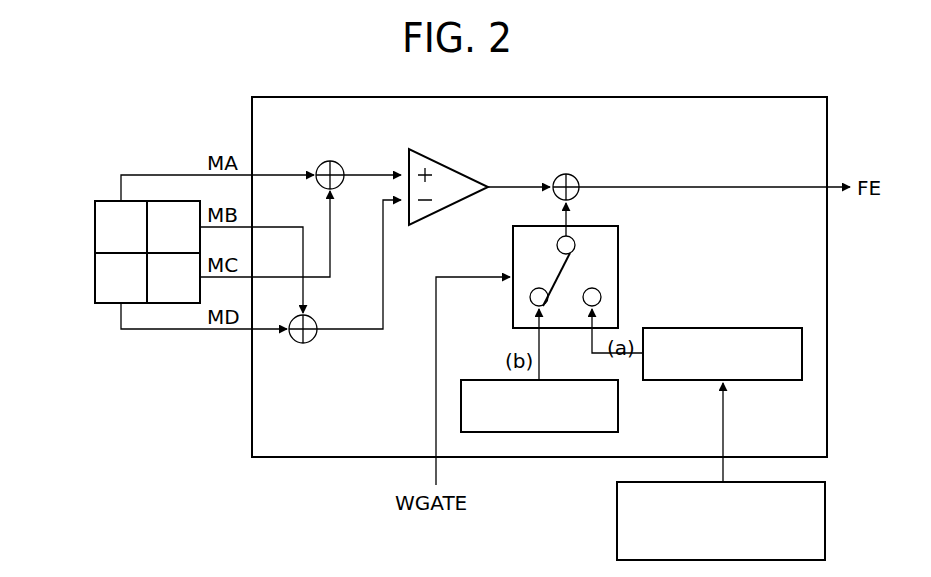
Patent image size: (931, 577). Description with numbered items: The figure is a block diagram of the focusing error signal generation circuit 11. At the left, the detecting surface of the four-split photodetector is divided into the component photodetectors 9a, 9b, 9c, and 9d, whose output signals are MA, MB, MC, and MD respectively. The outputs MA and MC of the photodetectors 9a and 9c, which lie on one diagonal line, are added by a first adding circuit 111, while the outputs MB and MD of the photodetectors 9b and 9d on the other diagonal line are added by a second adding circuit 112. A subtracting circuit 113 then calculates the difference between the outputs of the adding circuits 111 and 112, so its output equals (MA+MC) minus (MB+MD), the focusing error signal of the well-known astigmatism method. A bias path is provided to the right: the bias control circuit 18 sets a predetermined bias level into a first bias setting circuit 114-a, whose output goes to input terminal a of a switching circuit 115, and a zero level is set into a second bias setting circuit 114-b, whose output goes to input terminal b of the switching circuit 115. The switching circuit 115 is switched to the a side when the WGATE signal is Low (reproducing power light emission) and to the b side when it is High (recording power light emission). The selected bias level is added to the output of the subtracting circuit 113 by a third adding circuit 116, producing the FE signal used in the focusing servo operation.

The focusing error signal generation circuit 11 is at (727, 97).
The photodetector 9a is at (94, 226).
The photodetector 9b is at (175, 200).
The photodetector 9c is at (173, 304).
The photodetector 9d is at (94, 278).
The first adding circuit 111 is at (340, 163).
The second adding circuit 112 is at (303, 344).
The subtracting circuit 113 is at (449, 162).
The third adding circuit 116 is at (578, 175).
The switching circuit 115 is at (619, 253).
The first bias setting circuit 114-a is at (618, 413).
The second bias setting circuit 114-b is at (723, 328).
The bias control circuit 18 is at (616, 524).